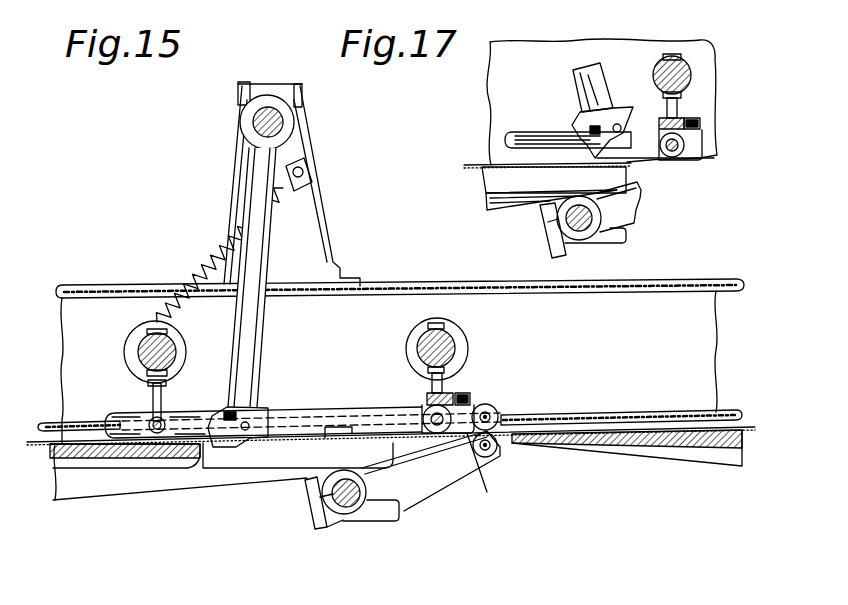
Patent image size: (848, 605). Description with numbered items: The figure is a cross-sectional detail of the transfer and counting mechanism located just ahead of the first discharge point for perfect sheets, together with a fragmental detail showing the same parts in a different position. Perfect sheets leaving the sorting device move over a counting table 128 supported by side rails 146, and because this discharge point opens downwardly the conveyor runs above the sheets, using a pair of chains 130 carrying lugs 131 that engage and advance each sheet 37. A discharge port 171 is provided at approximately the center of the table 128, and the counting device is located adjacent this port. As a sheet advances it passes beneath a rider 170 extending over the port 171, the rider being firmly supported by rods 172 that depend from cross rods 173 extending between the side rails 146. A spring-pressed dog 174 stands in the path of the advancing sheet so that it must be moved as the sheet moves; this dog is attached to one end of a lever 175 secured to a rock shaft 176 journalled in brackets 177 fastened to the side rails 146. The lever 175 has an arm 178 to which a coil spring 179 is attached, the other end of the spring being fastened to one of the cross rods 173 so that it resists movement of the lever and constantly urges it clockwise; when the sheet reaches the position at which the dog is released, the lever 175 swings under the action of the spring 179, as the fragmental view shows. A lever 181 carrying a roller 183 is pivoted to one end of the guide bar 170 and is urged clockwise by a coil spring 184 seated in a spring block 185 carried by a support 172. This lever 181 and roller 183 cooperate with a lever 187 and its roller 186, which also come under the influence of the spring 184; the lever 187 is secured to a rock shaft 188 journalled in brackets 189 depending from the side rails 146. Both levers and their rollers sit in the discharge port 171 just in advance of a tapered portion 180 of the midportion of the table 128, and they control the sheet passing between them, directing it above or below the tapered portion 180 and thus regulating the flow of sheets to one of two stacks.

In FIG. 15, the sheet 37 is at (33, 446).
In FIG. 17, the sheet 37 is at (472, 163).
In FIG. 15, the counting table 128 is at (102, 452).
In FIG. 15, the chains 130 is at (694, 279).
In FIG. 15, the lugs 131 is at (343, 446).
In FIG. 15, the side rails 146 is at (382, 300).
In FIG. 17, the side rails 146 is at (701, 62).
In FIG. 15, the rider 170 is at (282, 418).
In FIG. 17, the rider 170 is at (521, 130).
In FIG. 15, the discharge port 171 is at (285, 453).
In FIG. 17, the discharge port 171 is at (495, 183).
In FIG. 15, the rods 172 is at (150, 403).
In FIG. 17, the rods 172 is at (678, 108).
In FIG. 15, the cross rods 173 is at (148, 362).
In FIG. 17, the cross rods 173 is at (666, 70).
In FIG. 15, the spring-pressed dog 174 is at (215, 427).
In FIG. 17, the spring-pressed dog 174 is at (593, 144).
In FIG. 15, the lever 175 is at (258, 258).
In FIG. 17, the lever 175 is at (591, 67).
In FIG. 15, the rock shaft 176 is at (280, 124).
In FIG. 15, the brackets 177 is at (238, 191).
In FIG. 15, the arm 178 is at (306, 163).
In FIG. 15, the coil spring 179 is at (205, 257).
In FIG. 15, the tapered portion 180 is at (611, 440).
In FIG. 15, the lever 181 is at (475, 458).
In FIG. 17, the lever 181 is at (690, 146).
In FIG. 15, the roller 183 is at (490, 406).
In FIG. 15, the coil spring 184 is at (475, 392).
In FIG. 17, the coil spring 184 is at (702, 128).
In FIG. 15, the spring block 185 is at (425, 395).
In FIG. 17, the spring block 185 is at (685, 119).
In FIG. 15, the roller 186 is at (498, 452).
In FIG. 15, the lever 187 is at (410, 478).
In FIG. 17, the lever 187 is at (633, 207).
In FIG. 15, the rock shaft 188 is at (348, 502).
In FIG. 17, the rock shaft 188 is at (562, 219).
In FIG. 15, the brackets 189 is at (388, 508).
In FIG. 17, the brackets 189 is at (626, 236).